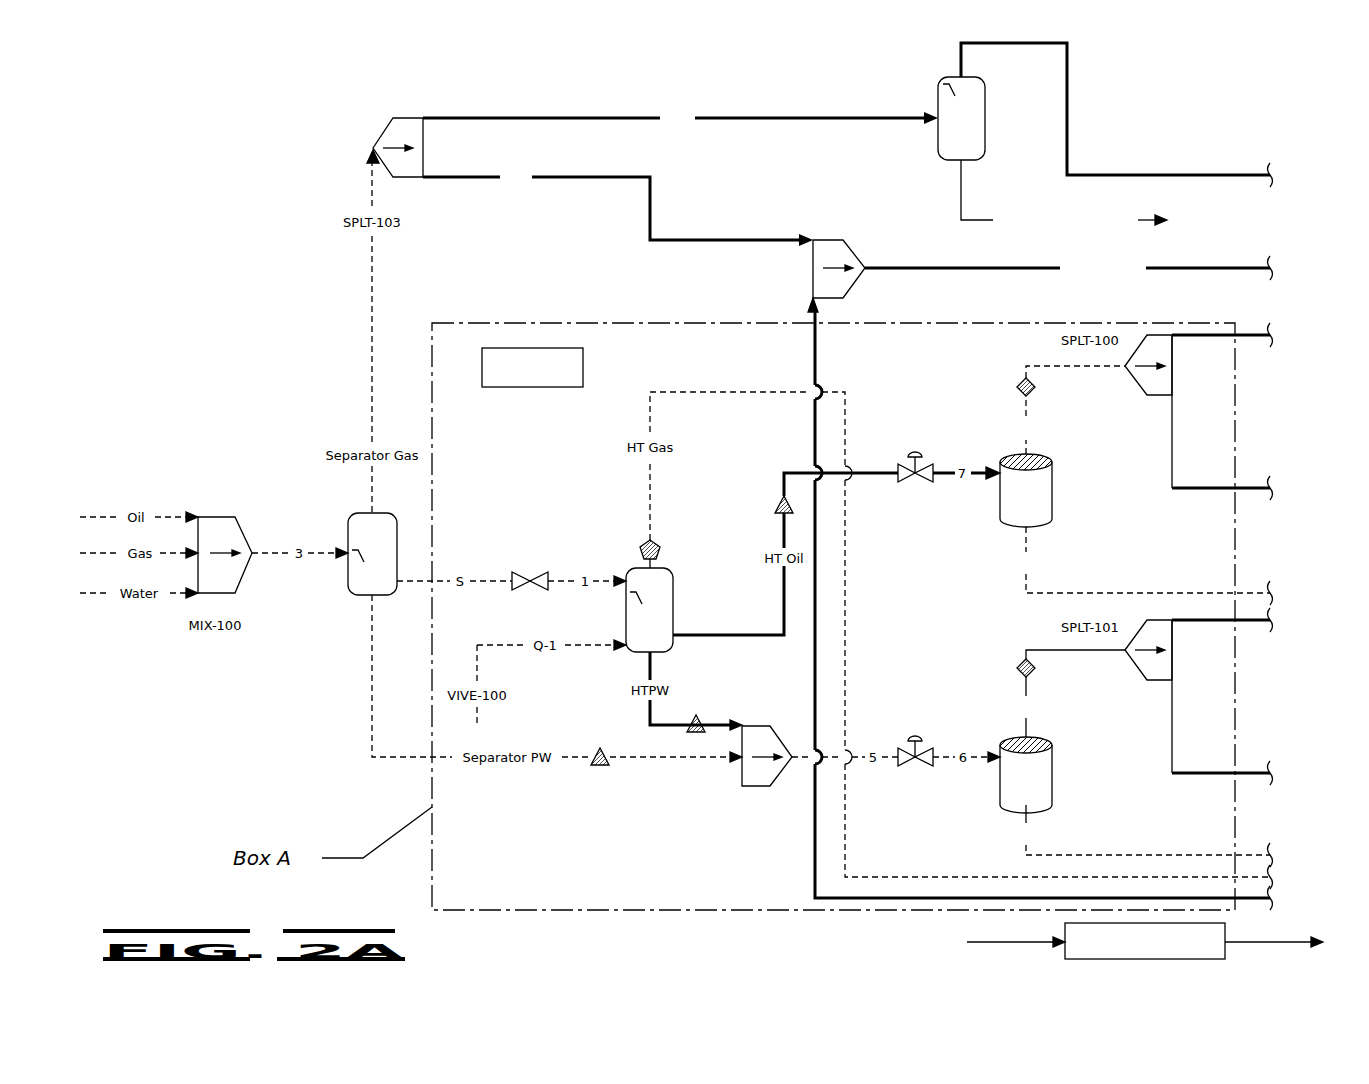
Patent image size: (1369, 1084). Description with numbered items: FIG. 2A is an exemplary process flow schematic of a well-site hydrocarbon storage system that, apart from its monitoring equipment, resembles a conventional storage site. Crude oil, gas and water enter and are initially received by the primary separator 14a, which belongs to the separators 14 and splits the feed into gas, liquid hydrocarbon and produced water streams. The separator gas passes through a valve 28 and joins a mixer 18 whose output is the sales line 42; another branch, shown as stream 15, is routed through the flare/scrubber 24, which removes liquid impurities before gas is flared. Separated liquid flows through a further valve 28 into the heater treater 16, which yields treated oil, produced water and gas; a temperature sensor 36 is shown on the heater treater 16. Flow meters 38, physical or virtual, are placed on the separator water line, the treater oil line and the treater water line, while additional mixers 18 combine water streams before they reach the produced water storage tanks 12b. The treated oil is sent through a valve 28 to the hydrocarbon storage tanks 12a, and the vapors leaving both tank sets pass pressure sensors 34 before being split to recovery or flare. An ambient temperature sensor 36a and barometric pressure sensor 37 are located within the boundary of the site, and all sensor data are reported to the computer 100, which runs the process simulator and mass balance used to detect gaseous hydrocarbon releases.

The hydrocarbon storage tanks 12a is at (1052, 488).
The produced water storage tanks 12b is at (1052, 770).
The separators 14 is at (618, 205).
The primary separator 14a is at (348, 521).
The flare gas line 15 is at (680, 117).
The heater treater 16 is at (673, 604).
The mixers 18 is at (855, 255).
The flare/scrubber 24 is at (985, 100).
The valves 28 is at (915, 453).
The pressure sensor 34 is at (1019, 381).
The temperature sensor 36 is at (645, 545).
The temperature sensor 36a is at (532, 367).
The barometric pressure sensor 37 is at (568, 381).
The flow meters 38 is at (781, 504).
The sales line 42 is at (1203, 268).
The computer 100 is at (1128, 955).